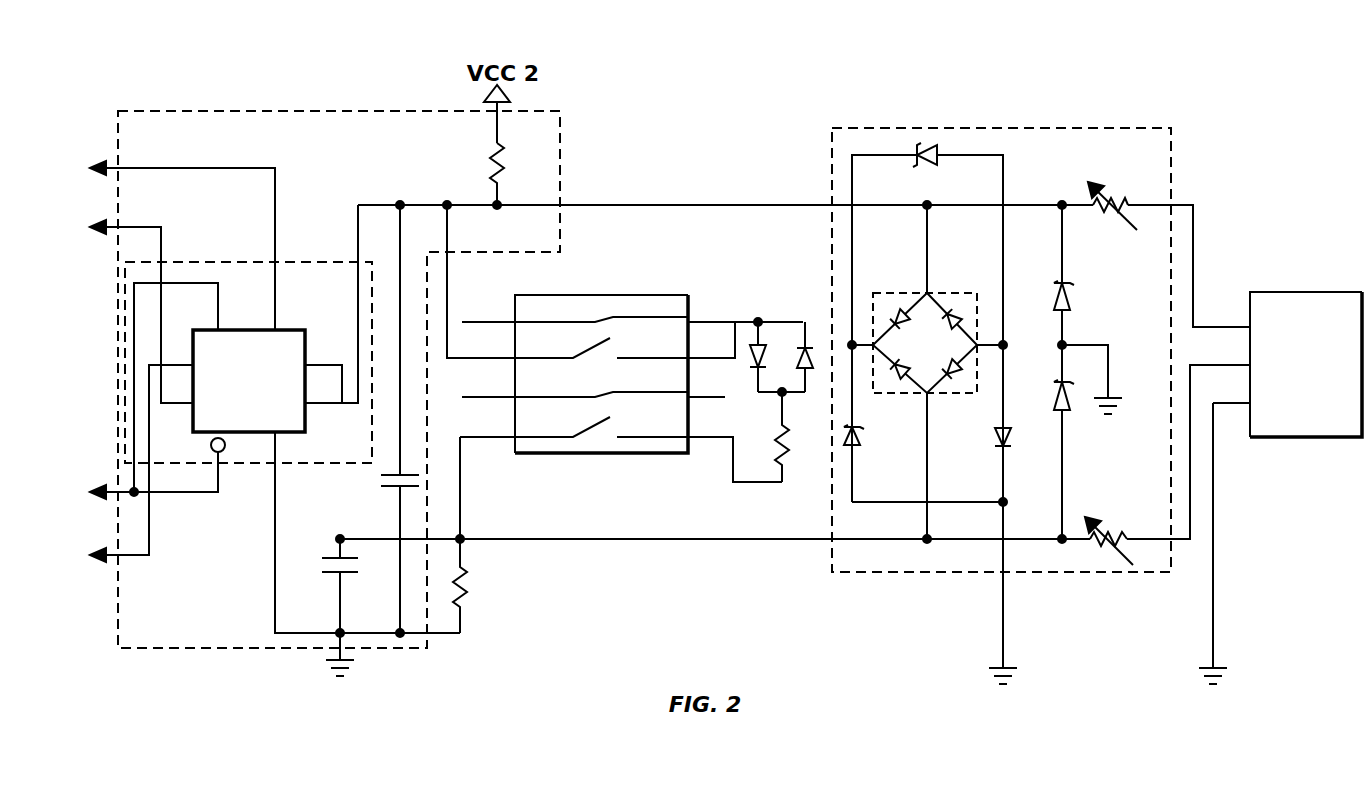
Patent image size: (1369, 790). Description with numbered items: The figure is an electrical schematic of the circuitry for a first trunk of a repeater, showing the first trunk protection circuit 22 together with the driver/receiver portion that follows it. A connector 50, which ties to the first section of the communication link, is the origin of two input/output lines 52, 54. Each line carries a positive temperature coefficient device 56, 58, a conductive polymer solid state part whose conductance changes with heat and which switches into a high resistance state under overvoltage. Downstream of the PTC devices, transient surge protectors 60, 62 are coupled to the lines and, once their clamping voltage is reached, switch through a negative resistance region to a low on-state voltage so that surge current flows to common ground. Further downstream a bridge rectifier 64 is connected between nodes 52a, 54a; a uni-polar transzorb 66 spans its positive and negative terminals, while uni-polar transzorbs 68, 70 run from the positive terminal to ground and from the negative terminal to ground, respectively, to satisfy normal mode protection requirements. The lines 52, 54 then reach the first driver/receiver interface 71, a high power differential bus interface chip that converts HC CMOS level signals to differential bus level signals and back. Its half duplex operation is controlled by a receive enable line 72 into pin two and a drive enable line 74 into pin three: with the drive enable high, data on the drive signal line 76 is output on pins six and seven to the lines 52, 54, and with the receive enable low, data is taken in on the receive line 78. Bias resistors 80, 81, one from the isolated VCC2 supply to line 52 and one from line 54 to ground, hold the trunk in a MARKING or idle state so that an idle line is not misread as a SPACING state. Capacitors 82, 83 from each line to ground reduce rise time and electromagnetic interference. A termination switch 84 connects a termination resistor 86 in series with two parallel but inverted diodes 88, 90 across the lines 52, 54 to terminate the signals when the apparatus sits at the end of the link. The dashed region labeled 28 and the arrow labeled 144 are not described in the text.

The first trunk protection circuit 22 is at (1148, 128).
The timer circuit 28 is at (290, 262).
The connector 50 is at (1330, 292).
The input/output line 52 is at (662, 205).
The node 52a is at (932, 203).
The input/output line 54 is at (655, 539).
The node 54a is at (920, 545).
The positive temperature coefficient device 56 is at (1115, 195).
The positive temperature coefficient device 58 is at (1115, 528).
The transient surge protector 60 is at (1052, 290).
The transient surge protector 62 is at (1052, 395).
The bridge rectifier 64 is at (900, 380).
The uni-polar transzorb 66 is at (922, 147).
The uni-polar transzorb 68 is at (860, 437).
The uni-polar transzorb 70 is at (988, 437).
The first driver/receiver interface 71 is at (236, 330).
The receive enable line 72 is at (212, 494).
The drive enable line 74 is at (196, 282).
The drive signal line 76 is at (150, 547).
The receive line 78 is at (163, 232).
The bias resistor 80 is at (505, 160).
The bias resistor 81 is at (468, 585).
The capacitor 82 is at (408, 487).
The capacitor 83 is at (327, 572).
The termination switch 84 is at (620, 295).
The termination resistor 86 is at (782, 462).
The diode 88 is at (755, 345).
The diode 90 is at (802, 348).
The line 144 is at (116, 497).